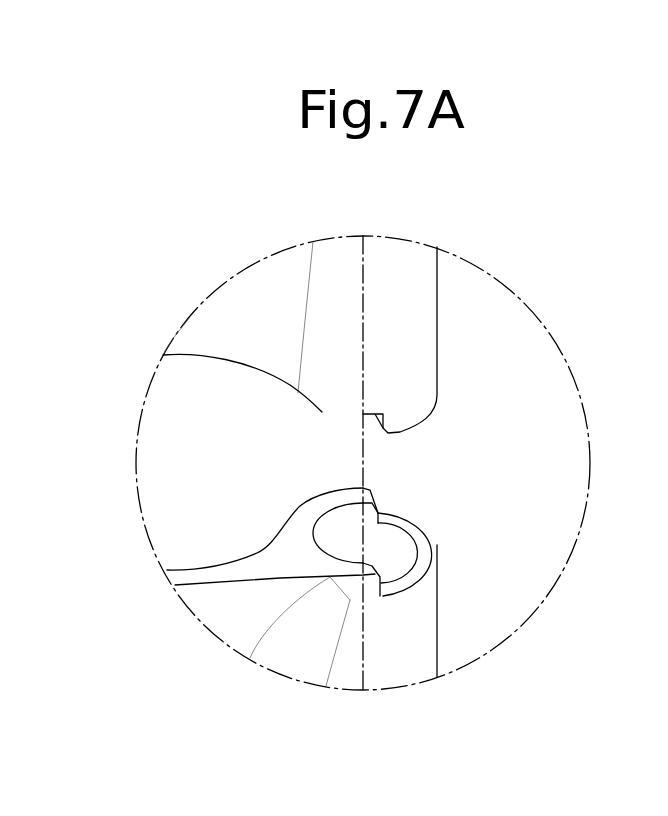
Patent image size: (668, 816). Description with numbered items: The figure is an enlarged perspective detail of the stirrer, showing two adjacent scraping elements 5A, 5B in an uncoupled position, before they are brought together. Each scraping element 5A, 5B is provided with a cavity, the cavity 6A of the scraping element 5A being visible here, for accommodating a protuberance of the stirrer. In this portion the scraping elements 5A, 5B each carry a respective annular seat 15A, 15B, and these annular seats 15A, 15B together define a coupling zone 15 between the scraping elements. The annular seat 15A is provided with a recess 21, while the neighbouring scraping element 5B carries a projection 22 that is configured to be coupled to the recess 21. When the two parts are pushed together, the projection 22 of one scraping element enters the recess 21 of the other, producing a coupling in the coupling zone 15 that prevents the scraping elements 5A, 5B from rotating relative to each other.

The scraping element 5A is at (228, 607).
The scraping element 5B is at (245, 307).
The cavity 6A is at (340, 536).
The coupling zone 15 is at (467, 482).
The annular seat 15A is at (417, 550).
The annular seat 15B is at (363, 415).
The recess 21 is at (410, 585).
The projection 22 is at (409, 412).